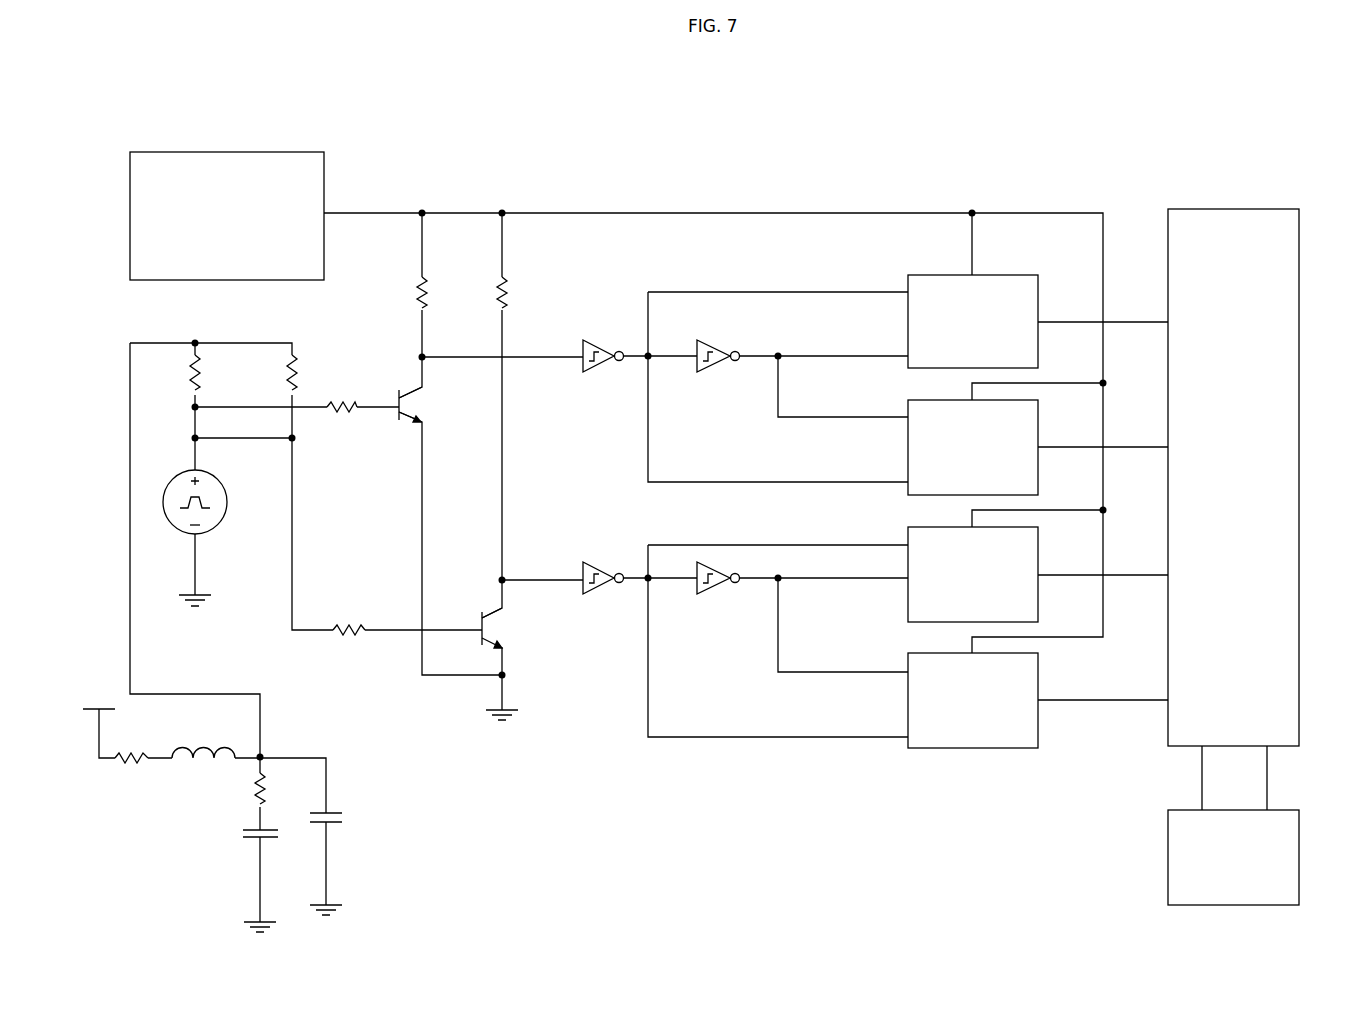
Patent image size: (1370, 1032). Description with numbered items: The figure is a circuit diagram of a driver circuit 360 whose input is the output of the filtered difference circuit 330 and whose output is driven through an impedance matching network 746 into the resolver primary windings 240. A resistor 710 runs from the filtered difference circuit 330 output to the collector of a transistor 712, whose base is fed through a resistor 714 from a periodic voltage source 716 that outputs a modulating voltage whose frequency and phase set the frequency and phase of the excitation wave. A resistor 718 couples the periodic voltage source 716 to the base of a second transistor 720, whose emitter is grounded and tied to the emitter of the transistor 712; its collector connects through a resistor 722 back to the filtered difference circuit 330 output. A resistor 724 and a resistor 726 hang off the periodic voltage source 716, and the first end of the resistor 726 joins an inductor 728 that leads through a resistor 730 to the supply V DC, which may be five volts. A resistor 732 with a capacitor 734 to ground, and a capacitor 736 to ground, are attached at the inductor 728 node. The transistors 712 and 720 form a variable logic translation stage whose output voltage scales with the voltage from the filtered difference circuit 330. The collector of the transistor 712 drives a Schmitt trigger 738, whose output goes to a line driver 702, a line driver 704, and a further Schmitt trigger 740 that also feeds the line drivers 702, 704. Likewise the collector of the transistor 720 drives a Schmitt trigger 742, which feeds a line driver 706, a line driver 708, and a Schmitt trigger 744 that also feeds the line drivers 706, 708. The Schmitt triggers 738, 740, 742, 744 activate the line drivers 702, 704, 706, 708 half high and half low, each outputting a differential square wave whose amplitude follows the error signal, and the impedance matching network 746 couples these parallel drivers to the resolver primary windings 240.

The resolver primary windings 240 is at (1300, 872).
The filtered difference circuit 330 is at (232, 152).
The driver circuit 360 is at (876, 118).
The line driver 702 is at (1000, 275).
The line driver 704 is at (946, 400).
The line driver 706 is at (946, 527).
The line driver 708 is at (946, 653).
The resistor 710 is at (418, 292).
The transistor 712 is at (412, 393).
The resistor 714 is at (333, 402).
The periodic voltage source 716 is at (220, 480).
The resistor 718 is at (348, 625).
The transistor 720 is at (490, 622).
The resistor 722 is at (504, 293).
The resistor 724 is at (290, 375).
The resistor 726 is at (192, 375).
The inductor 728 is at (227, 750).
The resistor 730 is at (131, 766).
The resistor 732 is at (260, 802).
The capacitor 734 is at (256, 845).
The capacitor 736 is at (335, 826).
The Schmitt trigger 738 is at (592, 343).
The Schmitt trigger 740 is at (706, 343).
The Schmitt trigger 742 is at (592, 565).
The Schmitt trigger 744 is at (712, 592).
The impedance matching network 746 is at (1216, 209).